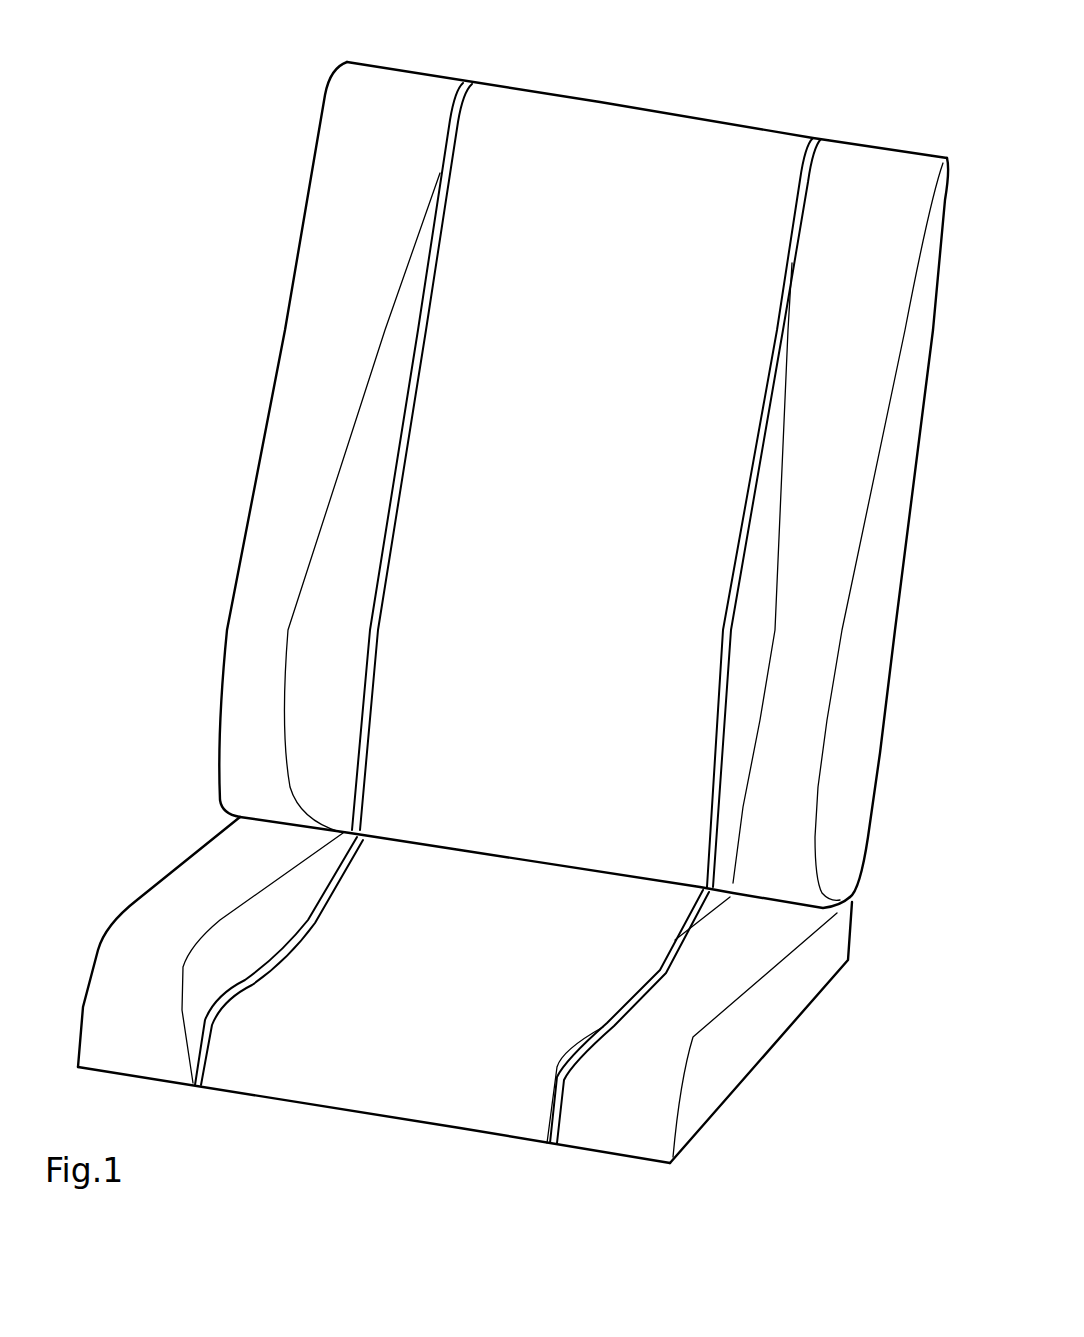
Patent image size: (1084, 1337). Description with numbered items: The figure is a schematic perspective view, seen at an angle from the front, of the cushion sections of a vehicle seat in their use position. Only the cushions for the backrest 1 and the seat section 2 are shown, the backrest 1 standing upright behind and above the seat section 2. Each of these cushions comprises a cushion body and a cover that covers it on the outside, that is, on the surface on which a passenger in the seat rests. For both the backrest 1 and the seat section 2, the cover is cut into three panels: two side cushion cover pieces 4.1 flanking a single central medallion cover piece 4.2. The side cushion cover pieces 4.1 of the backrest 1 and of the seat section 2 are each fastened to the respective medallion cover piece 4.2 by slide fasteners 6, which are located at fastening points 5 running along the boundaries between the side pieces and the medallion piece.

The backrest 1 is at (633, 83).
The seat section 2 is at (118, 853).
The side cushion cover piece 4.1 is at (372, 297).
The medallion cover piece 4.2 is at (588, 382).
The fastening point 5 is at (353, 630).
The slide fastener 6 is at (395, 493).